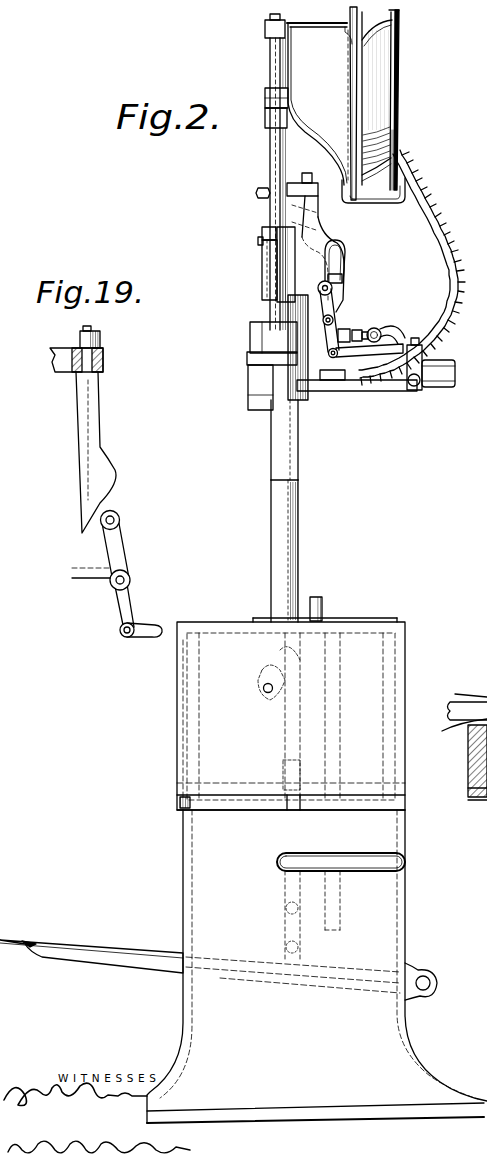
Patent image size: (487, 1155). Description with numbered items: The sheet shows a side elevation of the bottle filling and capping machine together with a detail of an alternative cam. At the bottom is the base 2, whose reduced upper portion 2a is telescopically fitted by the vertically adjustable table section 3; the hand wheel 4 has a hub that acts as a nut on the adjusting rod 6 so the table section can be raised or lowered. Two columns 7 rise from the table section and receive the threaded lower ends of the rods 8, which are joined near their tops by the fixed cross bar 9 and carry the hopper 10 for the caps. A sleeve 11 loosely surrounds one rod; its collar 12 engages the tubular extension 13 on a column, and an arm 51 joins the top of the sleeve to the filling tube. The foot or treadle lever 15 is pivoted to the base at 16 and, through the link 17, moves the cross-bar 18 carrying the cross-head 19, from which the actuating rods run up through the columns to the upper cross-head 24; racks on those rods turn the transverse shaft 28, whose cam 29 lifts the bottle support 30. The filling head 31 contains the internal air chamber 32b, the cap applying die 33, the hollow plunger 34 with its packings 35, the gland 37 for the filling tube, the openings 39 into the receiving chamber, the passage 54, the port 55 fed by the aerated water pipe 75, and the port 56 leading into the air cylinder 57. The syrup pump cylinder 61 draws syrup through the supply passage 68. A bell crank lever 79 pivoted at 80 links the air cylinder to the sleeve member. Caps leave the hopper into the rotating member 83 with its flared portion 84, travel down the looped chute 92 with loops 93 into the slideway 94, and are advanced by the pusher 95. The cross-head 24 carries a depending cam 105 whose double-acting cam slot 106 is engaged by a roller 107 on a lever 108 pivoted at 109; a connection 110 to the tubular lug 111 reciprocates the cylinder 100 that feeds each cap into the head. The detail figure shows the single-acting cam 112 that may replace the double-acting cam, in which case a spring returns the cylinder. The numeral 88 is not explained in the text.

In FIG. 2, the base 2 is at (182, 898).
In FIG. 2, the reduced upper portion 2a is at (200, 746).
In FIG. 2, the table section 3 is at (182, 713).
In FIG. 2, the hand wheel 4 is at (352, 872).
In FIG. 2, the adjusting rod 6 is at (343, 842).
In FIG. 2, the posts or columns 7 is at (285, 536).
In FIG. 2, the rods 8 is at (269, 63).
In FIG. 2, the cross bar 9 is at (265, 112).
In FIG. 2, the hopper 10 is at (346, 113).
In FIG. 2, the sleeve 11 is at (250, 339).
In FIG. 2, the flange or collar 12 is at (247, 359).
In FIG. 2, the tubular extension 13 is at (273, 455).
In FIG. 2, the foot or treadle lever 15 is at (91, 947).
In FIG. 2, the pivot 16 is at (429, 990).
In FIG. 2, the link 17 is at (276, 937).
In FIG. 2, the cross-bar 18 is at (277, 899).
In FIG. 2, the cross-head 19 is at (291, 785).
In FIG. 2, the cross-head 24 is at (260, 199).
In FIG. 19, the cross-head 24 is at (105, 361).
In FIG. 2, the transverse shaft 28 is at (263, 689).
In FIG. 2, the cam 29 is at (273, 700).
In FIG. 2, the bottle support 30 is at (318, 601).
In FIG. 2, the filling head 31 is at (250, 383).
In FIG. 2, the internal air chamber 32b is at (462, 882).
In FIG. 2, the cap applying die 33 is at (472, 833).
In FIG. 2, the hollow plunger 34 is at (472, 818).
In FIG. 2, the packings 35 is at (468, 795).
In FIG. 2, the gland 37 is at (452, 730).
In FIG. 2, the openings 39 is at (479, 680).
In FIG. 2, the arm 51 is at (267, 131).
In FIG. 2, the port or passage 54 is at (486, 872).
In FIG. 2, the port or passage 55 is at (461, 689).
In FIG. 2, the port or passage 56 is at (477, 662).
In FIG. 2, the air cylinder 57 is at (262, 281).
In FIG. 2, the syrup pump cylinder 61 is at (318, 210).
In FIG. 2, the syrup supply passage 68 is at (380, 330).
In FIG. 2, the pipe 75 is at (448, 706).
In FIG. 2, the bell crank lever 79 is at (263, 266).
In FIG. 2, the pivot 80 is at (322, 228).
In FIG. 2, the hollow rotating member 83 is at (380, 90).
In FIG. 2, the flared portion 84 is at (347, 21).
In FIG. 2, the flange 88 is at (399, 56).
In FIG. 2, the chute 92 is at (441, 220).
In FIG. 2, the loops 93 is at (443, 243).
In FIG. 2, the slideway 94 is at (330, 392).
In FIG. 2, the reciprocating pusher 95 is at (305, 403).
In FIG. 2, the reciprocating cylinder 100 is at (411, 390).
In FIG. 2, the depending cam 105 is at (345, 263).
In FIG. 2, the cam slot 106 is at (344, 277).
In FIG. 2, the roller 107 is at (332, 289).
In FIG. 19, the roller 107 is at (120, 519).
In FIG. 2, the lever 108 is at (334, 306).
In FIG. 19, the lever 108 is at (133, 556).
In FIG. 2, the pivot 109 is at (334, 320).
In FIG. 19, the pivot 109 is at (131, 580).
In FIG. 2, the connection 110 is at (381, 343).
In FIG. 19, the connection 110 is at (145, 629).
In FIG. 2, the tubular lug or sleeve 111 is at (402, 344).
In FIG. 19, the single-acting cam 112 is at (116, 489).